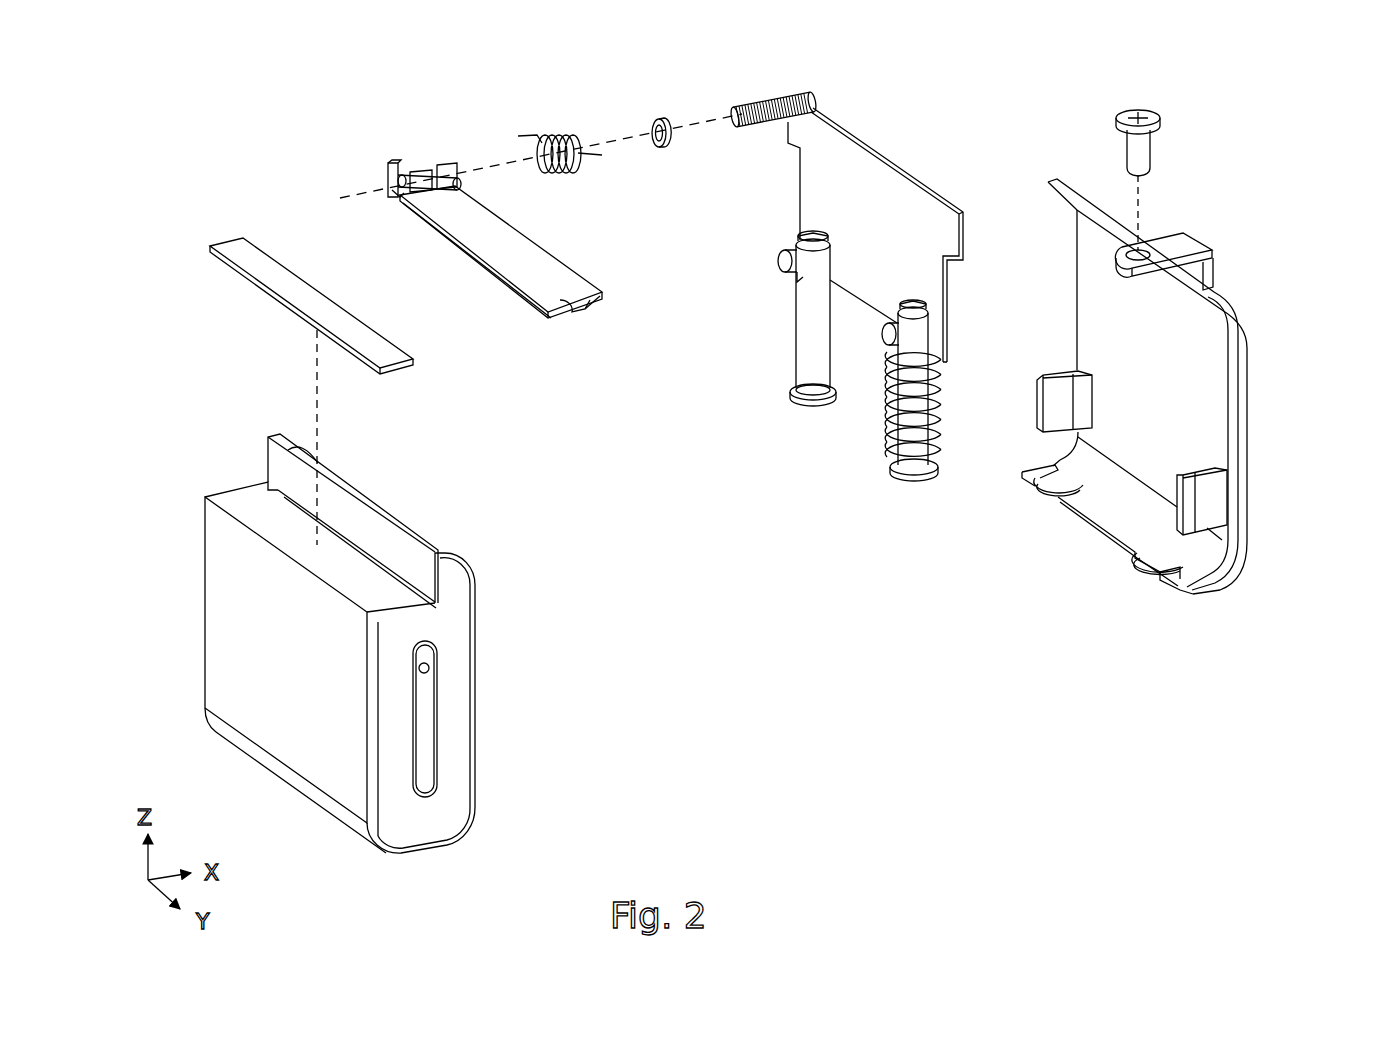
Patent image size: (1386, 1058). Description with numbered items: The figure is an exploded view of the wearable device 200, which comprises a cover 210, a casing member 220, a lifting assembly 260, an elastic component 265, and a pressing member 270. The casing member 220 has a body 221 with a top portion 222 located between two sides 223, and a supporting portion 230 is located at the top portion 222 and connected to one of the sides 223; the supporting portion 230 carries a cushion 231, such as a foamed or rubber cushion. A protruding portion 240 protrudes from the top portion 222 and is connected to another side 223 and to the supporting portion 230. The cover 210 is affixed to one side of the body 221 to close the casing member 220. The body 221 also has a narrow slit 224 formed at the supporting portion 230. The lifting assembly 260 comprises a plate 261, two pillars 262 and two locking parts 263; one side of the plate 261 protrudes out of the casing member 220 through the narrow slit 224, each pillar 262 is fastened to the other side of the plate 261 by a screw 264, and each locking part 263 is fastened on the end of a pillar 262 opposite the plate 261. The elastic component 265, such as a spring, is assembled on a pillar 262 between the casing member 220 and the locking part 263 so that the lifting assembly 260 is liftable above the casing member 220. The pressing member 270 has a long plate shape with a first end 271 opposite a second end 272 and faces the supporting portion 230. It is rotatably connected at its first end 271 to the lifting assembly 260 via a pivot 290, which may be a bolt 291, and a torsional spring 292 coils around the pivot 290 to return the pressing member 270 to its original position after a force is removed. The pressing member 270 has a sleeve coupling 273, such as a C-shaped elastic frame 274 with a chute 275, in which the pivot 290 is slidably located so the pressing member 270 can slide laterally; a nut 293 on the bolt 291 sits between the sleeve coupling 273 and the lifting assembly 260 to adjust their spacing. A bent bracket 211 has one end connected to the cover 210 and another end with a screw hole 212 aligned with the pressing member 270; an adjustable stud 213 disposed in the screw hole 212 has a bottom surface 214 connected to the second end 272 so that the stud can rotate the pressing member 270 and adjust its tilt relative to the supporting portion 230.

The wearable device 200 is at (1342, 66).
The cover 210 is at (1250, 420).
The bracket 211 is at (1210, 270).
The screw hole 212 is at (1152, 249).
The adjustable stud 213 is at (1145, 140).
The bottom surface 214 is at (1140, 175).
The casing member 220 is at (197, 559).
The body 221 is at (437, 820).
The top portion 222 is at (245, 485).
The sides 223 is at (230, 655).
The narrow slit 224 is at (392, 532).
The supporting portion 230 is at (246, 482).
The cushion 231 is at (233, 248).
The protruding portion 240 is at (392, 564).
The lifting assembly 260 is at (708, 197).
The plate 261 is at (810, 200).
The pillars 262 is at (805, 333).
The locking parts 263 is at (790, 388).
The screw 264 is at (783, 257).
The elastic component 265 is at (887, 407).
The pressing member 270 is at (505, 280).
The first end 271 is at (392, 200).
The second end 272 is at (583, 298).
The sleeve coupling 273 is at (495, 93).
The C-shaped elastic frame 274 is at (458, 171).
The chute 275 is at (408, 168).
The pivot 290 is at (824, 79).
The bolt 291 is at (770, 98).
The torsional spring 292 is at (557, 132).
The nut 293 is at (660, 118).